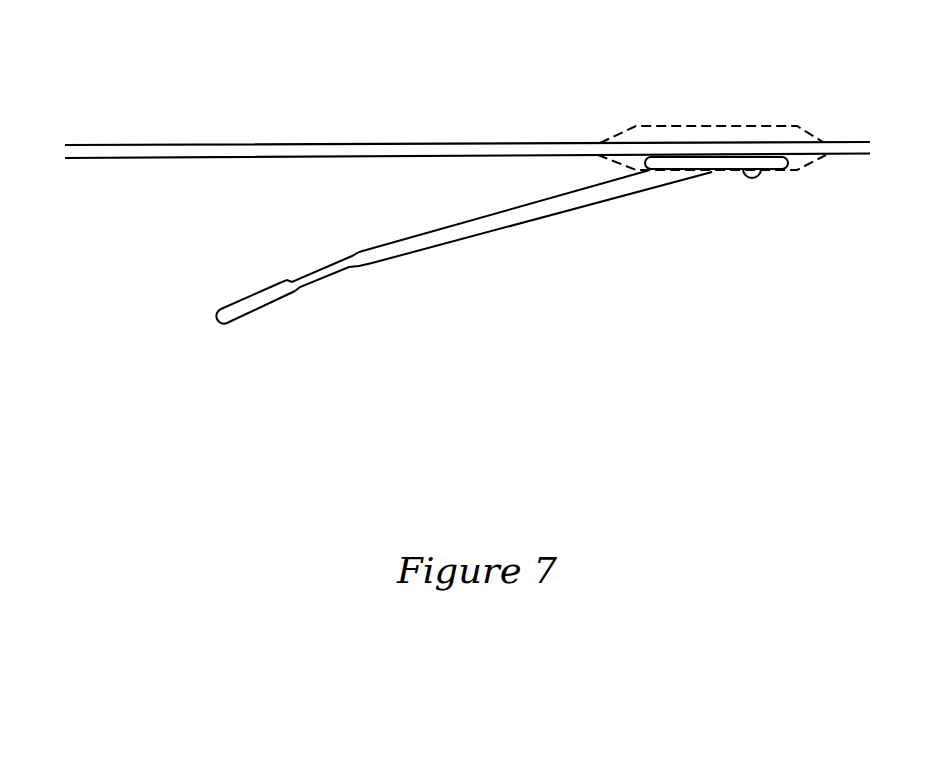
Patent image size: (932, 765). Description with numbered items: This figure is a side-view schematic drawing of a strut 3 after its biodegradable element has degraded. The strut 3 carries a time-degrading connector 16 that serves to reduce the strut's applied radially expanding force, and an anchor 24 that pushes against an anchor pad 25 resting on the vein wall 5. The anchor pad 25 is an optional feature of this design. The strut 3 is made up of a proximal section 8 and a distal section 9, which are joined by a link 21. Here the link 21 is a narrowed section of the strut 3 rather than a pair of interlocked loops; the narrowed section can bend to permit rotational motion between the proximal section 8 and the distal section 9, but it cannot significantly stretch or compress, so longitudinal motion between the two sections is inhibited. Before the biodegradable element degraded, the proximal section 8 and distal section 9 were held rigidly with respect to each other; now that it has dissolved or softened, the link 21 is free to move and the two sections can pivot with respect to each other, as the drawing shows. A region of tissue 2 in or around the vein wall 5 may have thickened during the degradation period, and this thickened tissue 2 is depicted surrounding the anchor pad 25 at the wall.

The region of tissue 2 is at (720, 151).
The vein wall 5 is at (306, 147).
The time-degrading connector 16 is at (434, 265).
The strut 3 is at (464, 265).
The distal section 9 is at (417, 250).
The link 21 is at (358, 280).
The proximal section 8 is at (257, 308).
The anchor pad 25 is at (781, 161).
The anchor 24 is at (725, 190).